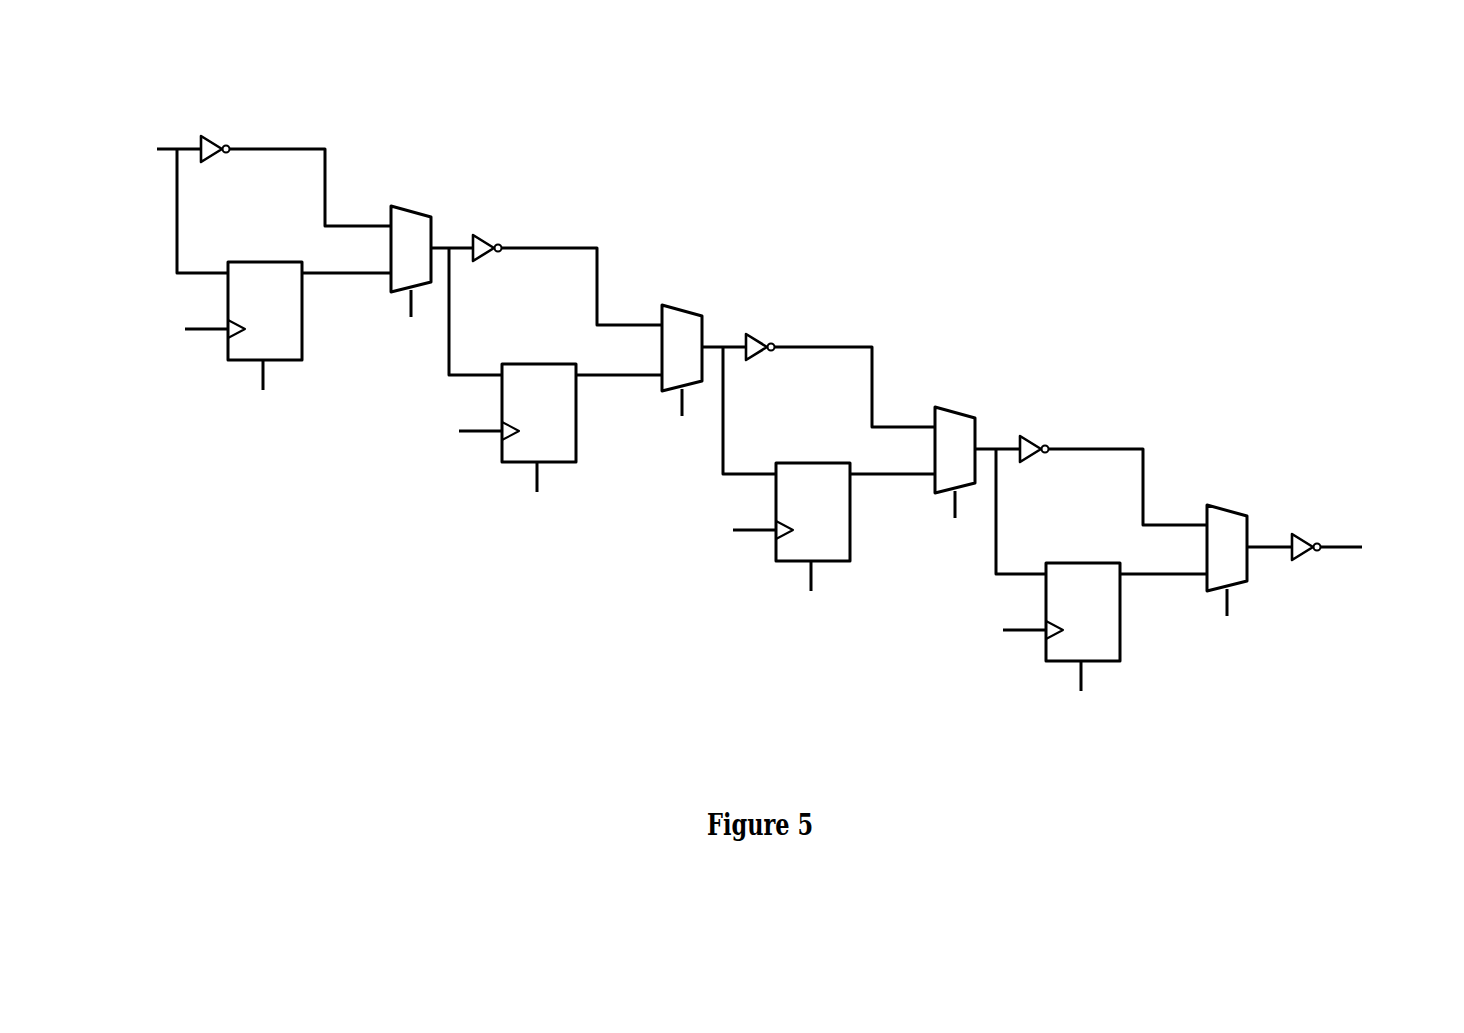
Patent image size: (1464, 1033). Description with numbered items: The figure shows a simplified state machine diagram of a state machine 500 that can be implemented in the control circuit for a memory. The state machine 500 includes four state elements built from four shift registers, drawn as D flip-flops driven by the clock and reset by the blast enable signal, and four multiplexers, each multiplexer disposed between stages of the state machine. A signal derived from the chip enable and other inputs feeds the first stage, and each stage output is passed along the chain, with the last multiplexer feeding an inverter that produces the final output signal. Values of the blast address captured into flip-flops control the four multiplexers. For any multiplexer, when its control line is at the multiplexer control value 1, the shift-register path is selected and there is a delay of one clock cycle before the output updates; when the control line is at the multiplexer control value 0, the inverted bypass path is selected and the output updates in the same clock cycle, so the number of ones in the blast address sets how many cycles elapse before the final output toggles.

The state machine 500 is at (836, 127).
The multiplexer control value '0' 0 is at (411, 249).
The multiplexer control value '1' 1 is at (353, 274).